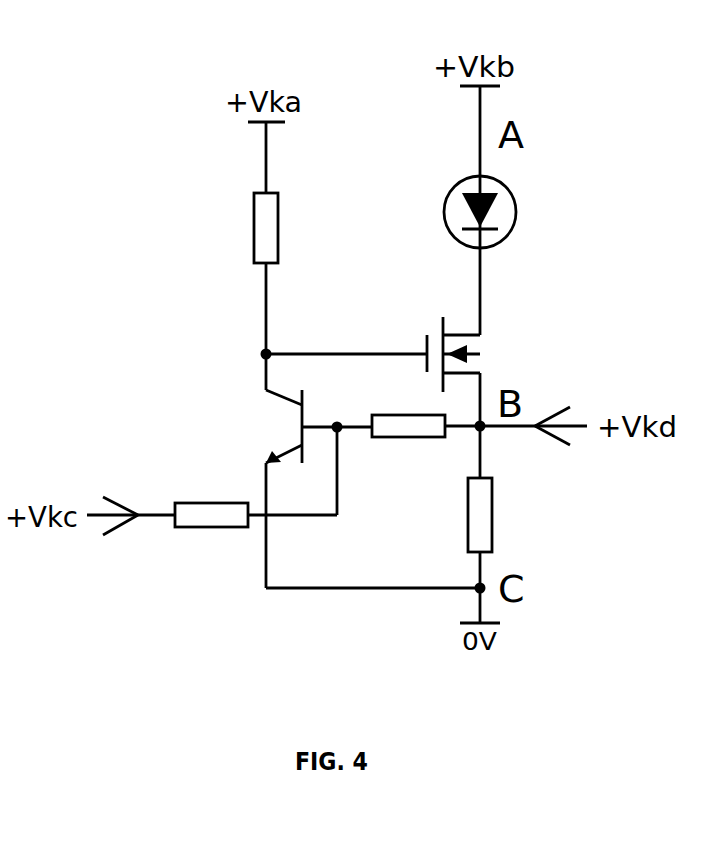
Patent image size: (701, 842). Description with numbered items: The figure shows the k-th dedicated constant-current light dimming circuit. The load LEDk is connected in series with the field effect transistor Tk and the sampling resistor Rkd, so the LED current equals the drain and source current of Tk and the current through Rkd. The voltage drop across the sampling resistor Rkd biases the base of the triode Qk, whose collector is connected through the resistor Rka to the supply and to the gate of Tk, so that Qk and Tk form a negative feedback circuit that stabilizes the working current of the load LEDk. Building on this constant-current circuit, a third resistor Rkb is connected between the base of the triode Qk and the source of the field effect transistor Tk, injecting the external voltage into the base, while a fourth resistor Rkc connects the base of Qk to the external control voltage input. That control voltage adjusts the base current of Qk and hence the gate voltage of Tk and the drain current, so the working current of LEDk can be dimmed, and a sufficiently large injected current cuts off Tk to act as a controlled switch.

The resistor Rka is at (234, 238).
The third resistor Rkb is at (426, 450).
The fourth resistor Rkc is at (256, 536).
The sampling resistor Rkd is at (515, 550).
The triode Qk is at (292, 408).
The field effect transistor Tk is at (476, 354).
The load LEDk is at (521, 210).